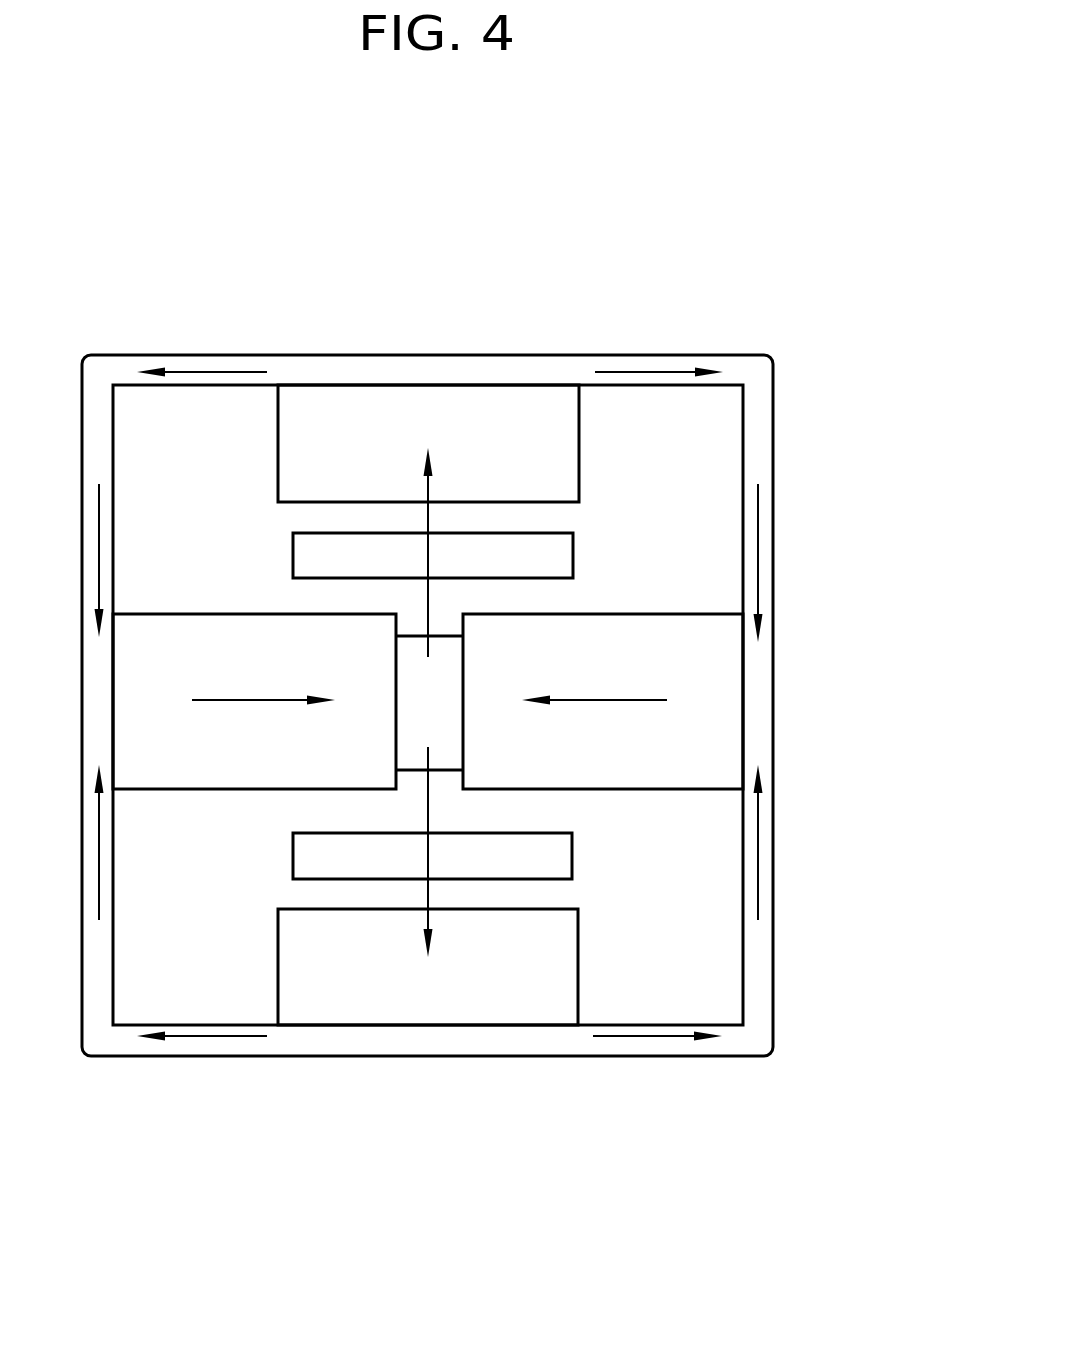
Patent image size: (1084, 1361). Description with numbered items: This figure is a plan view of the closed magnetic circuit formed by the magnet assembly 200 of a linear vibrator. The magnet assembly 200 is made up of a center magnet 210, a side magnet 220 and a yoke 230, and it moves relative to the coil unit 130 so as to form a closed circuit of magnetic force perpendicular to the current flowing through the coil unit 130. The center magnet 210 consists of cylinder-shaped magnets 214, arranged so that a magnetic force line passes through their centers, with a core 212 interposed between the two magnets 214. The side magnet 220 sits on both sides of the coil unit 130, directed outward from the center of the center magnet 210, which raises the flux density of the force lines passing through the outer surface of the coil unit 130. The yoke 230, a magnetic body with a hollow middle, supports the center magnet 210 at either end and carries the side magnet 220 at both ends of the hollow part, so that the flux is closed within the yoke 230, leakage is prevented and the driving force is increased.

The magnet assembly 200 is at (744, 262).
The yoke 230 is at (247, 355).
The side magnet 220 is at (542, 412).
The coil unit 130 is at (573, 548).
The center magnet 210 is at (428, 873).
The core 212 is at (445, 770).
The cylinder-shaped magnet 214 is at (242, 789).